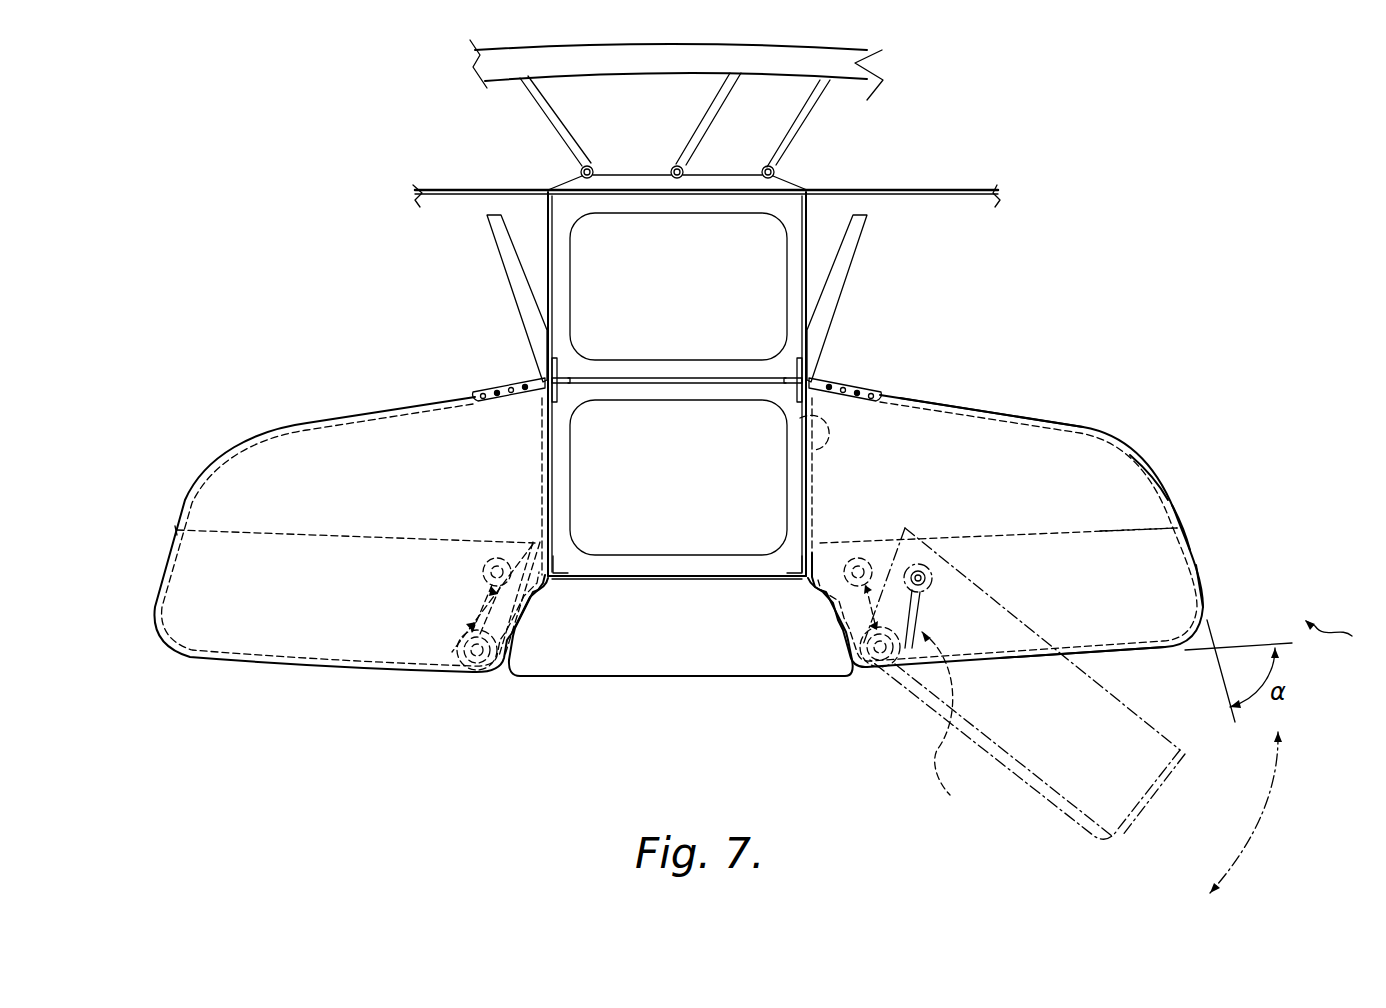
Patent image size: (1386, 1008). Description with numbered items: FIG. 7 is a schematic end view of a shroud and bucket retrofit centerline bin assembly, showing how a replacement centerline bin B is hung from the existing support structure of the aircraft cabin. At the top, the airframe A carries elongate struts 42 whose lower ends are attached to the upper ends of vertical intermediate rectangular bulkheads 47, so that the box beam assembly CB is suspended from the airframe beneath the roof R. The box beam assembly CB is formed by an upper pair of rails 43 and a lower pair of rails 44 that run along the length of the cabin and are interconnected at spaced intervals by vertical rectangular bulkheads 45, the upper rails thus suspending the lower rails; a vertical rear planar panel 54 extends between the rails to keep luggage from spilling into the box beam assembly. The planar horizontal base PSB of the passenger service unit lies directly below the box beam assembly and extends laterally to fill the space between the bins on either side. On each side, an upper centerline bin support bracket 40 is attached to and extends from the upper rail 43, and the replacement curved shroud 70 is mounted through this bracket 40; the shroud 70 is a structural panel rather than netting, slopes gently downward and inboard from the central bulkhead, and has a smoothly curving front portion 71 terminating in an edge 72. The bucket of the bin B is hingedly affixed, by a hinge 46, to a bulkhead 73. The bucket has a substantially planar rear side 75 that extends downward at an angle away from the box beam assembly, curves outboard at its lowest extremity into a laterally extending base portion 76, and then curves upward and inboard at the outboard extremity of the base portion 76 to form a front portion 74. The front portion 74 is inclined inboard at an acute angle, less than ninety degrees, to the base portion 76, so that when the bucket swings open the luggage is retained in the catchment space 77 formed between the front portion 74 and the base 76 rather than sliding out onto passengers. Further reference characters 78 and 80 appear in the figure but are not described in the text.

The upper centerline bin support bracket 40 is at (512, 390).
The elongate struts 42 is at (560, 133).
The upper rails 43 is at (564, 380).
The lower rails 44 is at (563, 566).
The vertical rectangular bulkheads 45 is at (793, 469).
The hinge 46 is at (950, 726).
The upper vertical intermediate rectangular bulkheads 47 is at (797, 290).
The vertical rear planar panel 54 is at (800, 417).
The curved shroud 70 is at (1140, 418).
The front portion of shroud 71 is at (1152, 469).
The edge of shroud 72 is at (1180, 512).
The bulkhead 73 is at (958, 432).
The front portion of bucket 74 is at (1200, 589).
The rear side of bucket 75 is at (852, 560).
The base portion of bucket 76 is at (1138, 657).
The catchment space 77 is at (1114, 810).
The fold line 78 is at (1188, 549).
The pivot 80 is at (881, 672).
The airframe A is at (866, 58).
The roof R is at (962, 197).
The box beam assembly CB is at (691, 485).
The base of passenger service unit PSB is at (640, 676).
The centerline bin B is at (1338, 645).